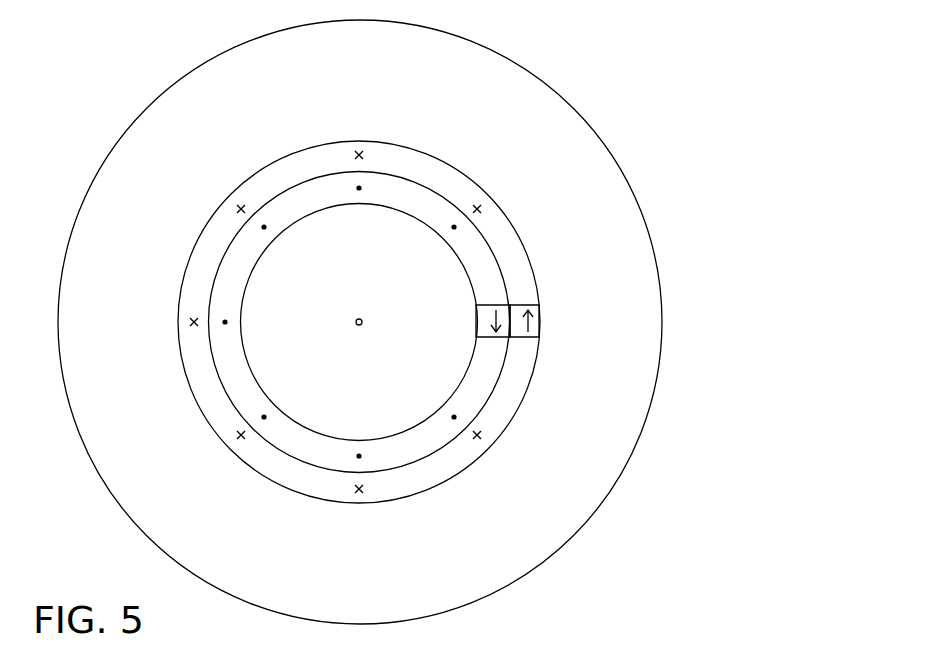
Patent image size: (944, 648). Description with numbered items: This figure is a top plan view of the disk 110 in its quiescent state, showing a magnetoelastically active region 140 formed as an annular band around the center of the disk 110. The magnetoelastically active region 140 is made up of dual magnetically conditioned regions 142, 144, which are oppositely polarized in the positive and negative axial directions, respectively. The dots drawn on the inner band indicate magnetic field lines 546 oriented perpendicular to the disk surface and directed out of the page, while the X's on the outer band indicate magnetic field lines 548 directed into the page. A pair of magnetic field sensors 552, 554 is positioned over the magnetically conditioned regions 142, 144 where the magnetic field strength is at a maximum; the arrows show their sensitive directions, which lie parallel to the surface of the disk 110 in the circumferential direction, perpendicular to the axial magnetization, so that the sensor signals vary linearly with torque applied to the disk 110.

The disk 110 is at (538, 52).
The magnetoelastically active region 140 is at (436, 378).
The magnetically conditioned region 142 is at (417, 443).
The magnetically conditioned region 144 is at (498, 420).
The magnetic field lines 546 is at (268, 229).
The magnetic field lines 548 is at (230, 210).
The magnetic field sensor 552 is at (487, 322).
The magnetic field sensor 554 is at (535, 322).